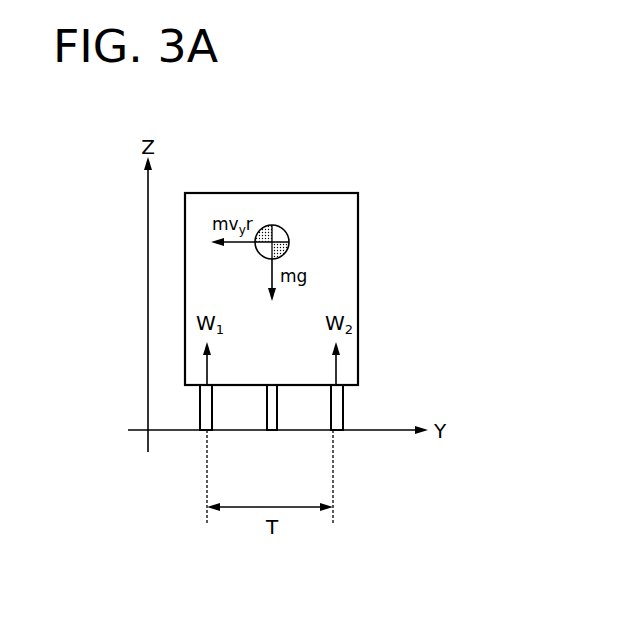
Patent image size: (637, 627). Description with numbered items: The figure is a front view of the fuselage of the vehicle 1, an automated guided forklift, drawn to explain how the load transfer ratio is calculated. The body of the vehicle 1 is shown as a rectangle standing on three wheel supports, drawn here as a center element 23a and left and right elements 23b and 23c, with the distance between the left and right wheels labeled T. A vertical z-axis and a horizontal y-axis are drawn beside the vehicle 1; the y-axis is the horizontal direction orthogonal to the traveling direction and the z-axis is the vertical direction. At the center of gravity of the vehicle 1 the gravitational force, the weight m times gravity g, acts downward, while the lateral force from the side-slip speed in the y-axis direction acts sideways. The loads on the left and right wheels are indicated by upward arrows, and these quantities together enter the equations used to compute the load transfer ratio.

The vehicle 1 is at (322, 193).
The center lead terminal 23a is at (270, 432).
The left lead terminal 23b is at (200, 408).
The right lead terminal 23c is at (343, 410).